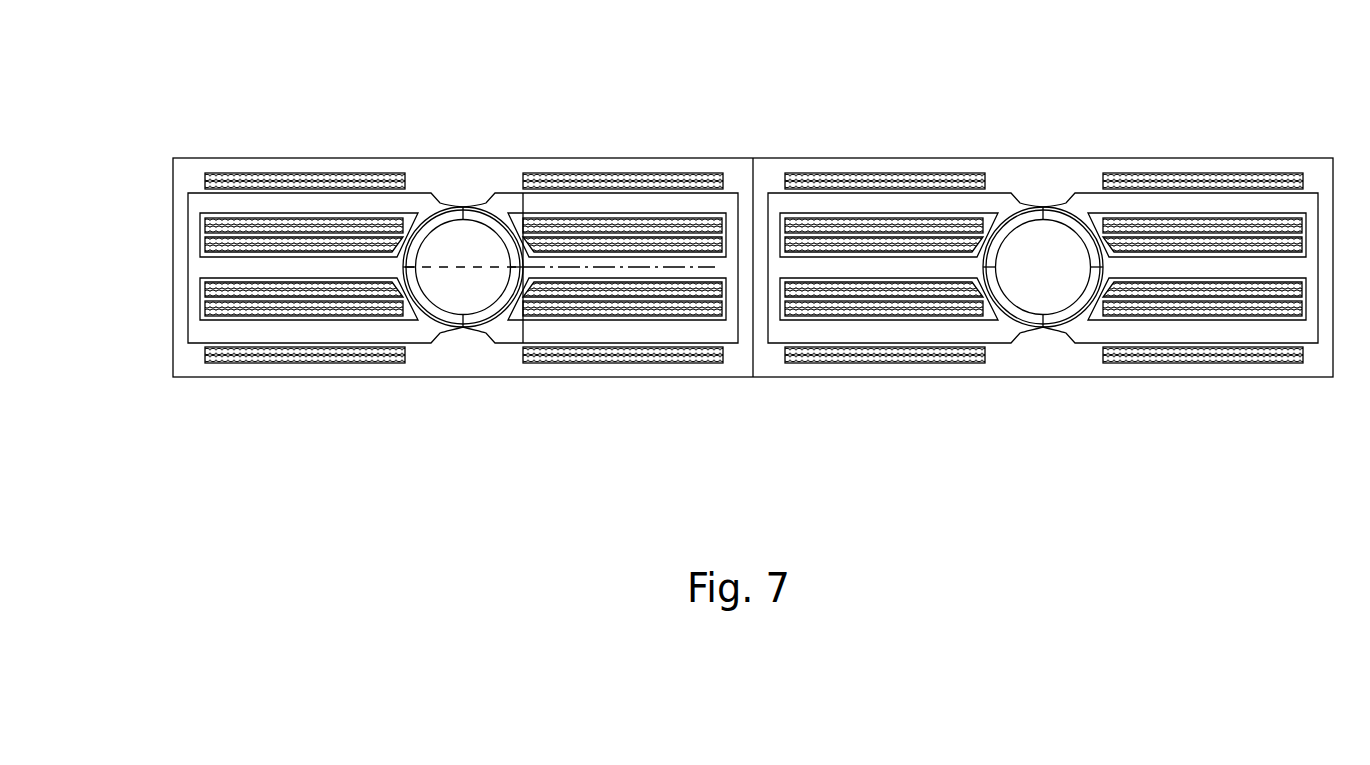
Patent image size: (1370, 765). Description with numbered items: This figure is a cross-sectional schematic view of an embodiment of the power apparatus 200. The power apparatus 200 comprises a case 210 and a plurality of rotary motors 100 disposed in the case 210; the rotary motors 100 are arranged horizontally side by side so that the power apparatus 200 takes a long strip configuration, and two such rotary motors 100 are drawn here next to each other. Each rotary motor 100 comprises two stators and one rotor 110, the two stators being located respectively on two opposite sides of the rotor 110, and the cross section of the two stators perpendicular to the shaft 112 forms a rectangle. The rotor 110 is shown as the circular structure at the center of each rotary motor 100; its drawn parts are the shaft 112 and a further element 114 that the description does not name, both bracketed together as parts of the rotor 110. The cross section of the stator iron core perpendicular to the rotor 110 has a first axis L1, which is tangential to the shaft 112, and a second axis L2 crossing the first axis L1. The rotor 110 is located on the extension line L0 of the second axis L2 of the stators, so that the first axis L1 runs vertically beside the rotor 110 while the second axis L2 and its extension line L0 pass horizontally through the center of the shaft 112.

The power apparatus 200 is at (239, 69).
The case 210 is at (418, 158).
The rotary motor 100 is at (753, 274).
The rotor 110 is at (468, 356).
The shaft 112 is at (445, 293).
The ring 114 is at (497, 305).
The extension line L0 is at (440, 267).
The first axis L1 is at (523, 203).
The second axis L2 is at (621, 176).